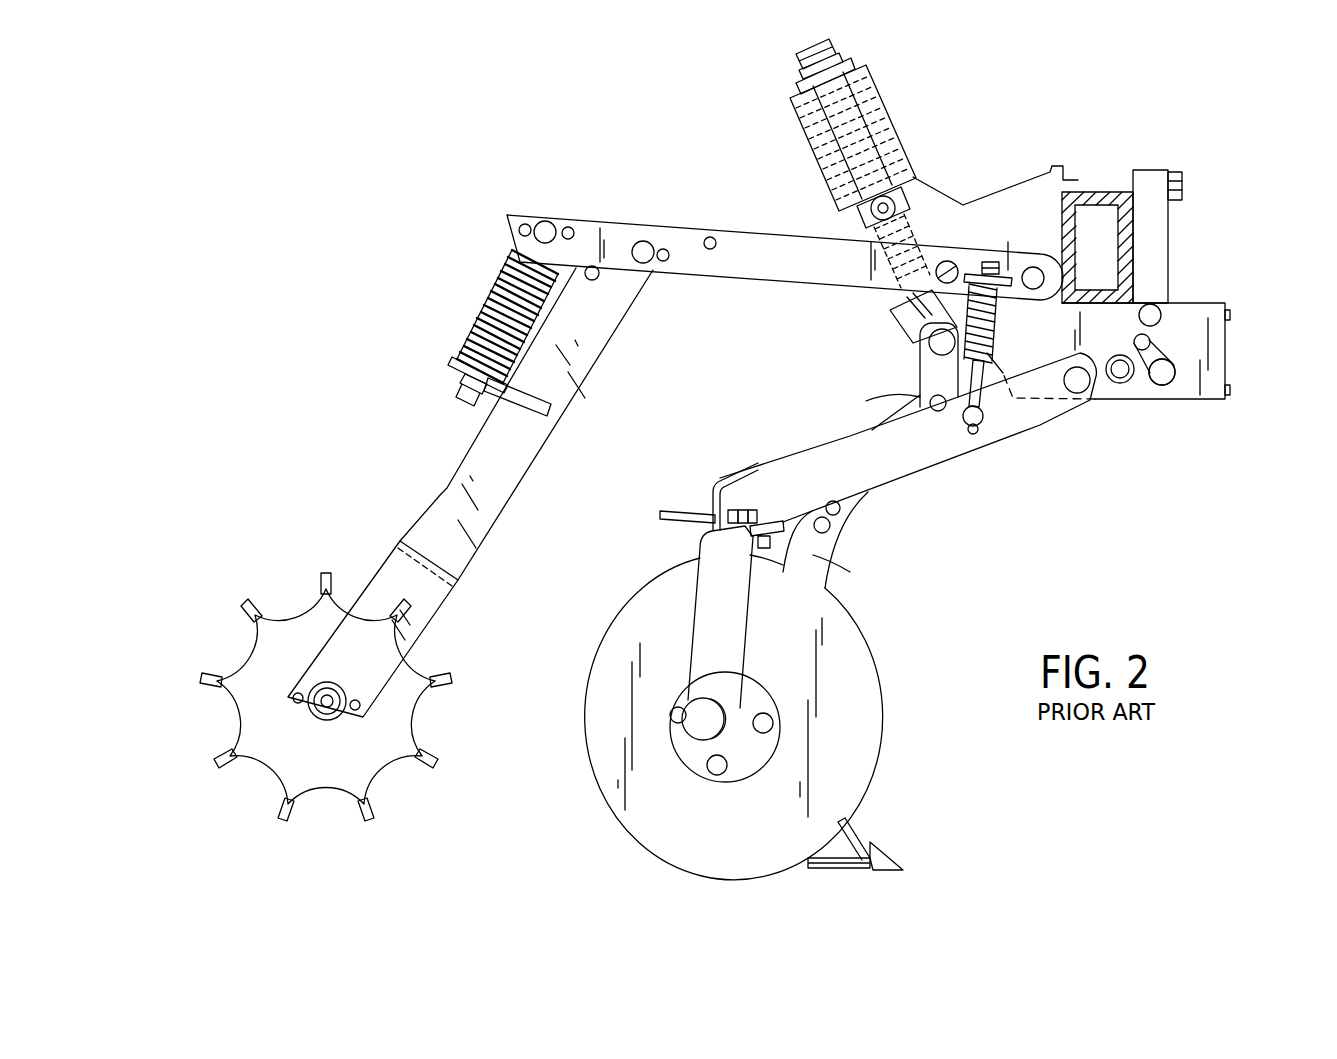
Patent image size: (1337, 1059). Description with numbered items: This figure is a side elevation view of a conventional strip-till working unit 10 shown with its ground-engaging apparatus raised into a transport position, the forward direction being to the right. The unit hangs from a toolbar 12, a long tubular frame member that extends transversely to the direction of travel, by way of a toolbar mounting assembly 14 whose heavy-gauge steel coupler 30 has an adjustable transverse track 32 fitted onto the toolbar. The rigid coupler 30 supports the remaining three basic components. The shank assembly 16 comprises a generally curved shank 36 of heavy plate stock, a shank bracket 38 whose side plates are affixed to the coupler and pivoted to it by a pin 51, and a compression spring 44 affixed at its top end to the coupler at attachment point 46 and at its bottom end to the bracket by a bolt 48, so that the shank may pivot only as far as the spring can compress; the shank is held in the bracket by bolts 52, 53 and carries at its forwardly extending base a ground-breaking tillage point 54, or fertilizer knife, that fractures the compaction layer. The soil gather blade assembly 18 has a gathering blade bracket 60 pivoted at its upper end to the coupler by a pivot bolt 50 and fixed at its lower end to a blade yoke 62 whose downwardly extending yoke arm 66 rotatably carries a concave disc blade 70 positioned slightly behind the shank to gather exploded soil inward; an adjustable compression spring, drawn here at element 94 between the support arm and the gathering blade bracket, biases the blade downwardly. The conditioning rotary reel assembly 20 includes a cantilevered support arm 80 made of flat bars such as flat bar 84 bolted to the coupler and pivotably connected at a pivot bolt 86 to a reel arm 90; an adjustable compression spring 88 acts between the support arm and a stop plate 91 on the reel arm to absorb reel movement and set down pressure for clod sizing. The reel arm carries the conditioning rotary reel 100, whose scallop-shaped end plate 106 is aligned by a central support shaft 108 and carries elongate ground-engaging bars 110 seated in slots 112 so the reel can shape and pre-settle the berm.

The working unit 10 is at (458, 130).
The toolbar 12 is at (1133, 252).
The toolbar mounting assembly 14 is at (1196, 284).
The shank assembly 16 is at (862, 535).
The soil gather blade assembly 18 is at (712, 455).
The conditioning rotary reel assembly 20 is at (318, 522).
The coupler 30 is at (1212, 352).
The track 32 is at (1110, 185).
The shank 36 is at (812, 554).
The shank bracket 38 is at (868, 352).
The compression spring 44 is at (800, 135).
The spring attachment point 46 is at (805, 48).
The bolt 48 is at (940, 348).
The pivot bolt 50 is at (1078, 380).
The pin 51 is at (1162, 372).
The bolt 52 is at (886, 395).
The bolt 53 is at (1122, 378).
The tillage point 54 is at (888, 852).
The gathering blade bracket 60 is at (940, 445).
The blade yoke 62 is at (672, 545).
The yoke arm 66 is at (728, 640).
The blade 70 is at (734, 717).
The support arm 80 is at (748, 208).
The flat bar 84 is at (730, 268).
The pivot bolt 86 is at (643, 240).
The adjustable compression spring 88 is at (500, 312).
The reel arm 90 is at (515, 470).
The stop plate 91 is at (490, 390).
The spring 94 is at (1000, 352).
The conditioning rotary reel 100 is at (345, 697).
The end plate 106 is at (283, 765).
The support shaft 108 is at (327, 700).
The ground-engaging bar 110 is at (205, 674).
The slot 112 is at (266, 592).